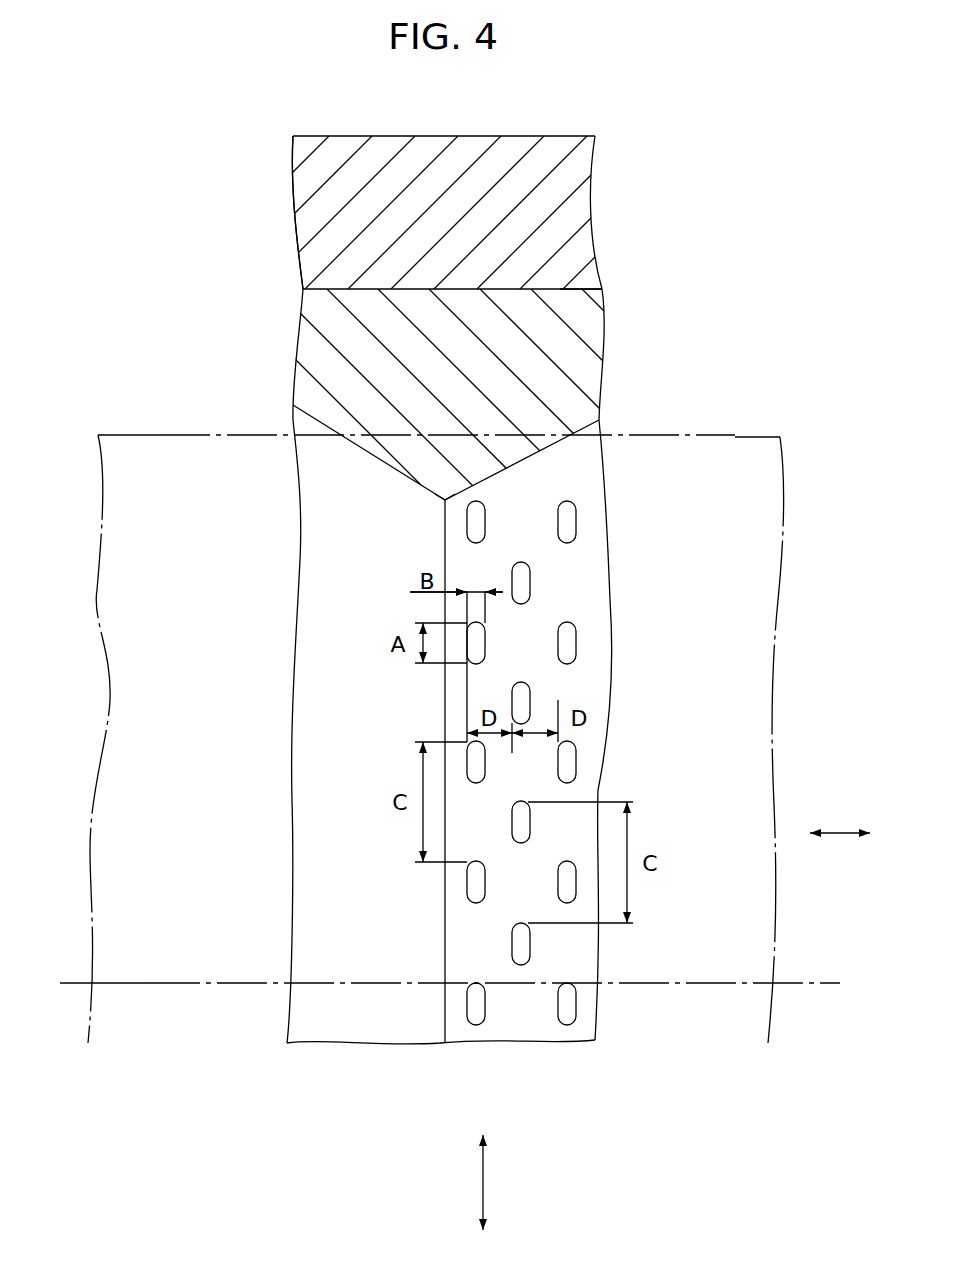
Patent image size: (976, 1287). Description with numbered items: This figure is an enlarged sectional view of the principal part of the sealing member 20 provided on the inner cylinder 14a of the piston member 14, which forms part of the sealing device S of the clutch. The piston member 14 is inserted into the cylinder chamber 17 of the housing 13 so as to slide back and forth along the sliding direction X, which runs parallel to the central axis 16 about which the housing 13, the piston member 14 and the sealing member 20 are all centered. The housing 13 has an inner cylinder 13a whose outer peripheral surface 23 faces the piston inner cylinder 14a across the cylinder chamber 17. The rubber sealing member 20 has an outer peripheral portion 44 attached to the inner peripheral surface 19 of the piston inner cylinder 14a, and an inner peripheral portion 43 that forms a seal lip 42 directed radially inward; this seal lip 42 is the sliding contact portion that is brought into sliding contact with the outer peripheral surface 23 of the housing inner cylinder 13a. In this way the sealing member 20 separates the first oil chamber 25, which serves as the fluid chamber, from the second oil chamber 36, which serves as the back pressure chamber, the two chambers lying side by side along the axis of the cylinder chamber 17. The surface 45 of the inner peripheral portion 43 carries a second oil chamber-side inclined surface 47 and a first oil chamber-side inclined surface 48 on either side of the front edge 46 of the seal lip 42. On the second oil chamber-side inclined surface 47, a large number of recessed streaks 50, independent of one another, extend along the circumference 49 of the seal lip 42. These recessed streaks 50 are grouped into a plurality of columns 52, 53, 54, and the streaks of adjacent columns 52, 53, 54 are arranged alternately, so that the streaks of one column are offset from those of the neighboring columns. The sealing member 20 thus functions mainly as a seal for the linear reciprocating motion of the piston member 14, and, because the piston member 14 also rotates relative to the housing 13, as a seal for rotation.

The housing 13 is at (120, 433).
The inner cylinder 13a is at (162, 433).
The piston member 14 is at (593, 160).
The inner cylinder 14a is at (573, 207).
The central axis 16 is at (802, 980).
The cylinder chamber 17 is at (578, 492).
The inner peripheral surface 19 is at (555, 290).
The sealing member 20 is at (603, 310).
The outer peripheral surface 23 is at (227, 435).
The first oil chamber 25 is at (295, 455).
The second oil chamber 36 is at (571, 436).
The seal lip 42 is at (447, 484).
The inner peripheral portion 43 is at (413, 471).
The outer peripheral portion 44 is at (303, 297).
The surface 45 is at (337, 872).
The front edge 46 is at (445, 960).
The second oil chamber-side inclined surface 47 is at (580, 963).
The first oil chamber-side inclined surface 48 is at (335, 975).
The circumference 49 is at (492, 1184).
The recessed streaks 50 is at (485, 523).
The column 52 is at (473, 1018).
The column 53 is at (520, 955).
The column 54 is at (567, 1015).
The sealing device S is at (737, 305).
The sliding direction X is at (840, 830).